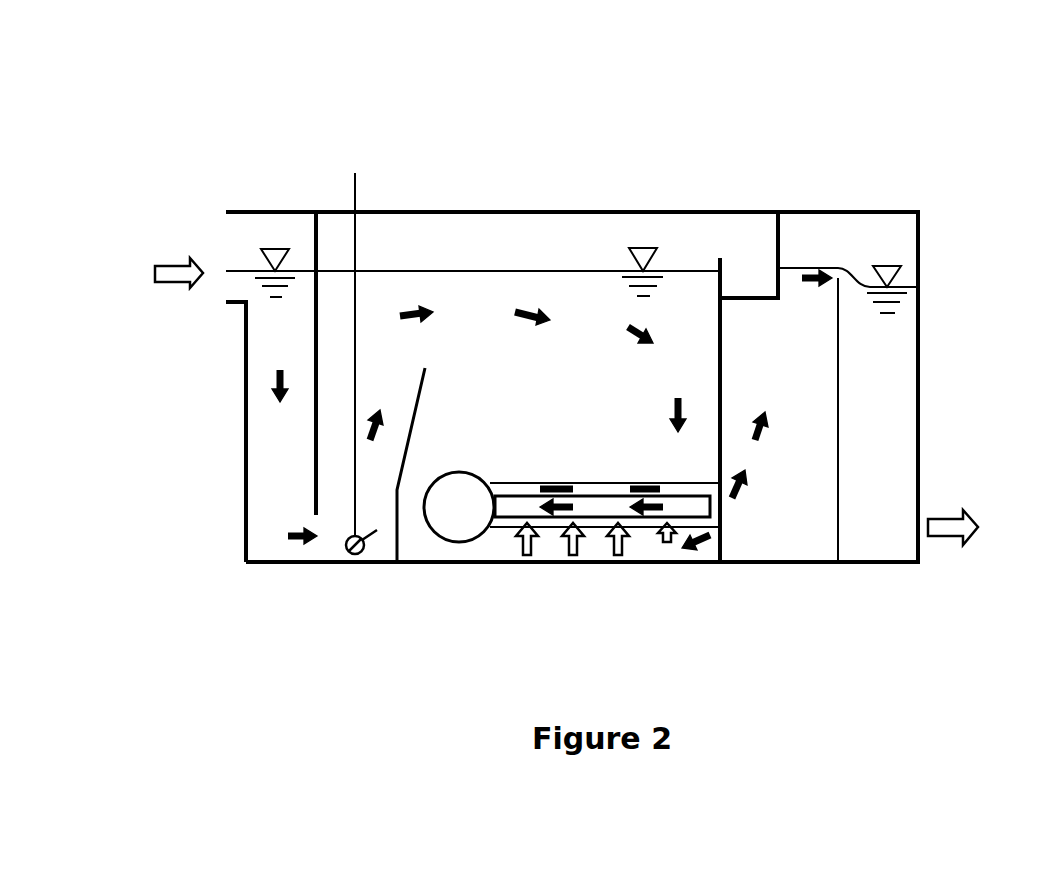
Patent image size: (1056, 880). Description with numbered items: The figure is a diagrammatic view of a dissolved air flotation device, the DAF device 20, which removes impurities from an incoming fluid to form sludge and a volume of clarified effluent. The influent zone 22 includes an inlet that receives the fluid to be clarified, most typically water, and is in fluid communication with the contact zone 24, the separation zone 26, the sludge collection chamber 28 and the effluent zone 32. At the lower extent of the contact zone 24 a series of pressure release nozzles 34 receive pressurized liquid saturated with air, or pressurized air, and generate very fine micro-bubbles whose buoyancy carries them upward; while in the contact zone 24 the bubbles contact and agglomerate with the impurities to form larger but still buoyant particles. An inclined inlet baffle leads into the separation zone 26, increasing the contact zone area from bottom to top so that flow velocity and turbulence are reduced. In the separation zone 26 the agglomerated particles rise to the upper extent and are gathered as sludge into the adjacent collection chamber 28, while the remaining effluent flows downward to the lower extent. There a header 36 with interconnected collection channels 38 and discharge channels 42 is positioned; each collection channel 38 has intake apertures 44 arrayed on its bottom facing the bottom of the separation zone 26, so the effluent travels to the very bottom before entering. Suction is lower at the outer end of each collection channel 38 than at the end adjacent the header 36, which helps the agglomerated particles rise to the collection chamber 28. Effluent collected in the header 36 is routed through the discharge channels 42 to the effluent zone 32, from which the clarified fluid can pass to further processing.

The DAF device 20 is at (913, 183).
The influent zone 22 is at (255, 488).
The contact zone 24 is at (315, 562).
The separation zone 26 is at (479, 300).
The sludge collection chamber 28 is at (743, 262).
The effluent zone 32 is at (783, 522).
The pressure release nozzles 34 is at (365, 562).
The header 36 is at (464, 525).
The collection channels 38 is at (647, 510).
The discharge channels 42 is at (597, 485).
The intake apertures 44 is at (520, 555).